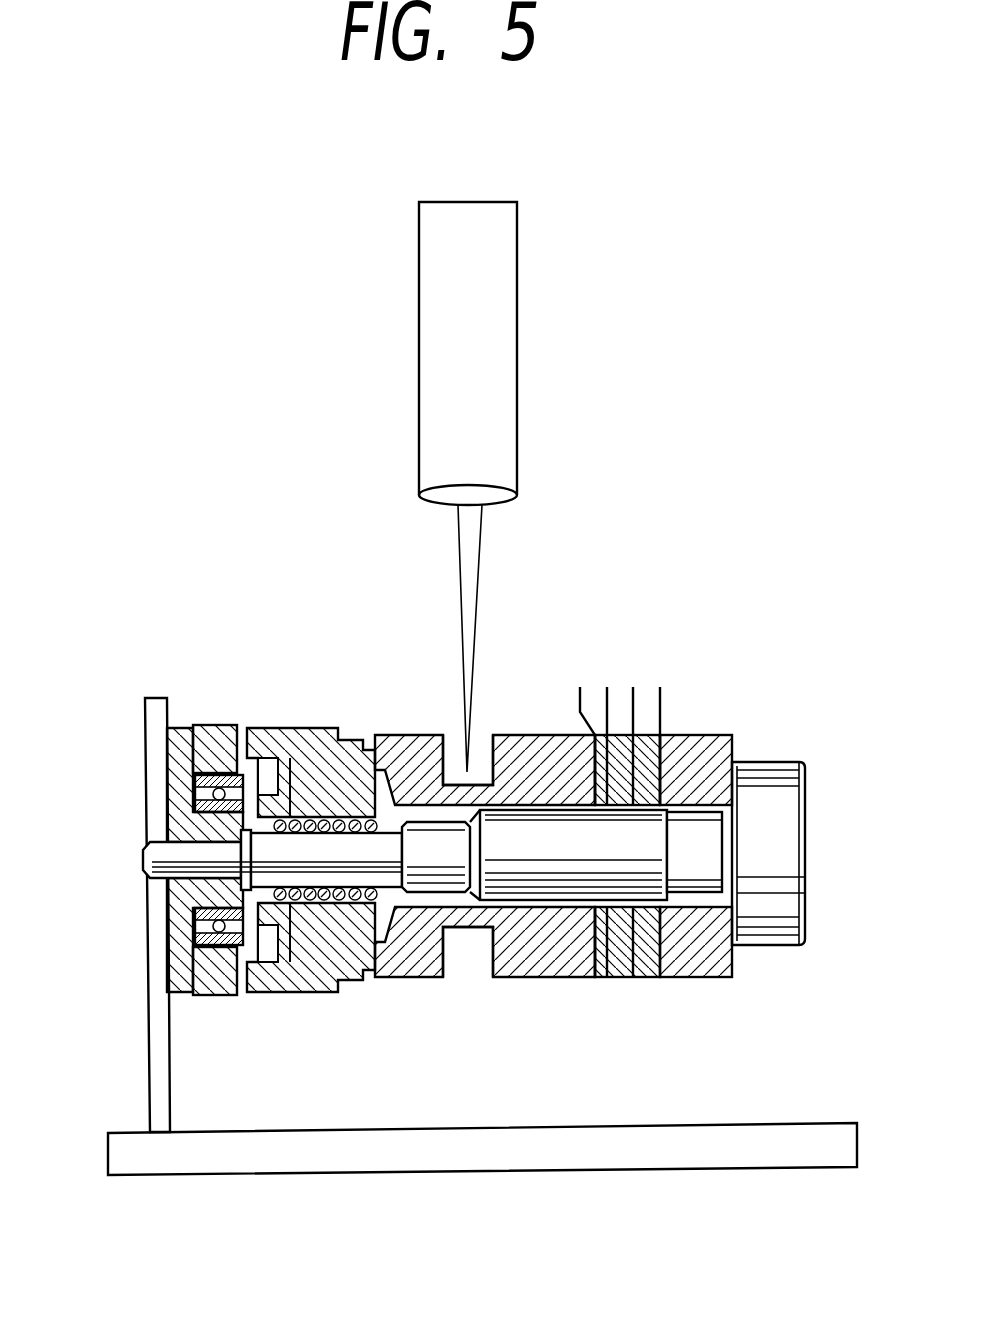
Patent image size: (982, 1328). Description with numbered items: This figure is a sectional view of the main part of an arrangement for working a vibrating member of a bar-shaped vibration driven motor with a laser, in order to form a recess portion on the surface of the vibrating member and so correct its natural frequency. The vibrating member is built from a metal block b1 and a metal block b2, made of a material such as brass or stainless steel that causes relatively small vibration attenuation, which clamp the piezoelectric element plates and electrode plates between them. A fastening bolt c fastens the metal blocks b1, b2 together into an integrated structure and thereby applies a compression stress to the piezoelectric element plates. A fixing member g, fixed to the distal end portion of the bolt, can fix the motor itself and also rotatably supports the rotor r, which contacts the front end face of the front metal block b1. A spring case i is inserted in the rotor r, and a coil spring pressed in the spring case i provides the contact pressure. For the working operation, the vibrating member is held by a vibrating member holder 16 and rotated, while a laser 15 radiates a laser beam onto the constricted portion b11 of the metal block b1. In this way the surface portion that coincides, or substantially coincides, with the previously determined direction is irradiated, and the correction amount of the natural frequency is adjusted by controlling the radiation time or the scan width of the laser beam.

The laser 15 is at (497, 378).
The vibrating member holder 16 is at (230, 1157).
The fixing member g is at (177, 745).
The rotor r is at (311, 740).
The spring case i is at (317, 922).
The metal block b1 is at (412, 940).
The constricted portion b11 is at (472, 937).
The metal block b2 is at (702, 940).
The fastening bolt c is at (772, 787).